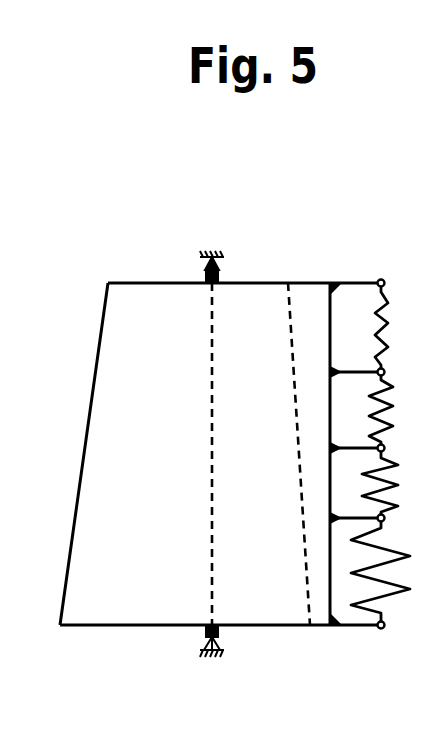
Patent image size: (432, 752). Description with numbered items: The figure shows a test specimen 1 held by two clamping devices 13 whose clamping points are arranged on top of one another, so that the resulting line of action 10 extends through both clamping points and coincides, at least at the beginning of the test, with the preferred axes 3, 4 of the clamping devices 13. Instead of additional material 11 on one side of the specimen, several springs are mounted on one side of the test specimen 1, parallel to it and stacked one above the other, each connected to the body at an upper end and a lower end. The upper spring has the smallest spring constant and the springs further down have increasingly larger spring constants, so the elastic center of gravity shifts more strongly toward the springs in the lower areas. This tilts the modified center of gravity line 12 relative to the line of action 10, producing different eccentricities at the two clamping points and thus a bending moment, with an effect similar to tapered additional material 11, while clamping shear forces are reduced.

The test specimen 1 is at (396, 488).
The preferred axis of the clamping device 3 is at (112, 454).
The preferred axis of the clamping device 4 is at (112, 454).
The line of action 10 is at (212, 403).
The additional material 11 is at (191, 454).
The modified center of gravity line 12 is at (291, 308).
The clamping device 13 is at (222, 271).